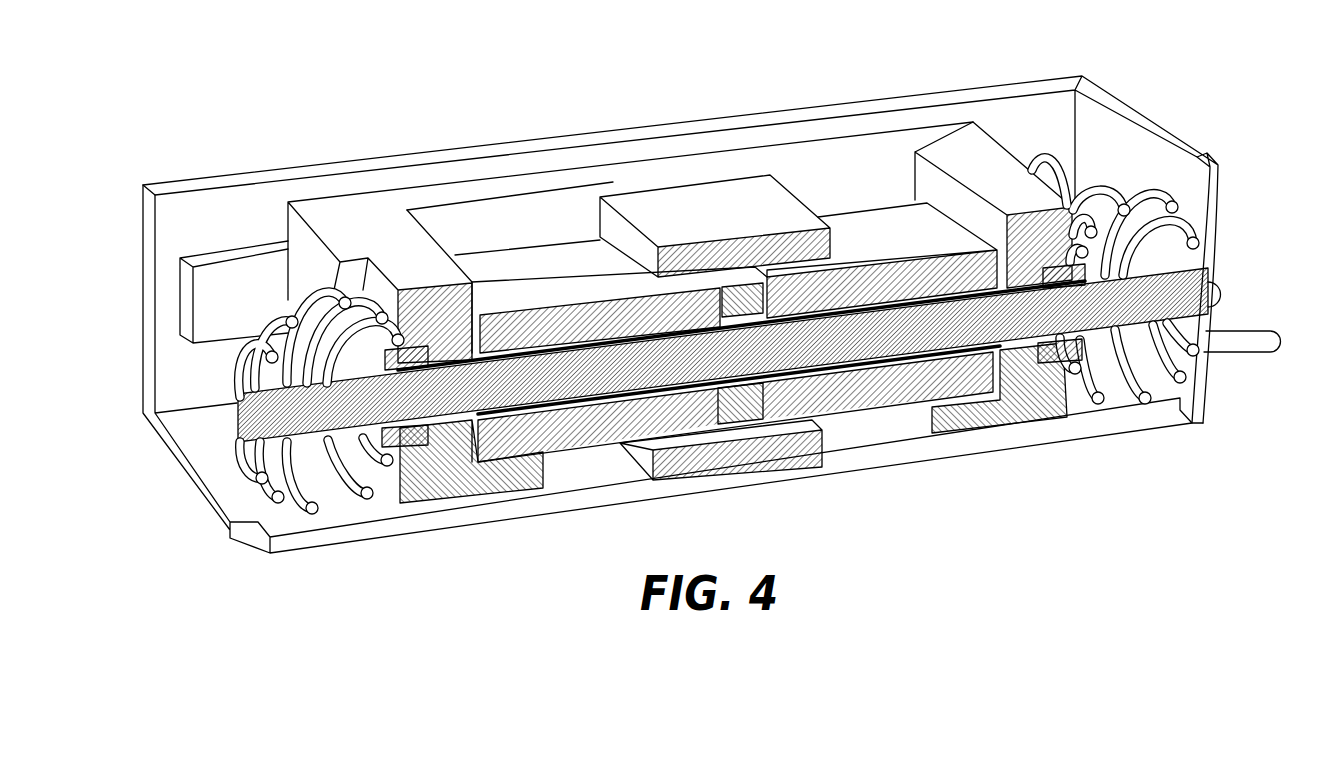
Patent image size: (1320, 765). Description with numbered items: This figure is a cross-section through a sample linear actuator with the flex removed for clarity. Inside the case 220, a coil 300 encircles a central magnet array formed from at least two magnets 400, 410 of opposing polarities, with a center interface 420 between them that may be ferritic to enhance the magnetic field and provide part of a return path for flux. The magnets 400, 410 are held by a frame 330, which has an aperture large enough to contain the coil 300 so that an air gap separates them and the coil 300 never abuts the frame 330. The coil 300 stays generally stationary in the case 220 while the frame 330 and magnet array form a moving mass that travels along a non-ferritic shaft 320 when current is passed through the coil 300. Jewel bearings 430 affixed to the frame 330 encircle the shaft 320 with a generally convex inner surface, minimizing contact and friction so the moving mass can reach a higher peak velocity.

The case 220 is at (175, 185).
The coil 300 is at (712, 207).
The shaft 320 is at (1212, 266).
The frame 330 is at (308, 222).
The magnet 400 is at (548, 265).
The magnet 410 is at (872, 232).
The center interface 420 is at (744, 403).
The jewel bearings 430 is at (418, 447).